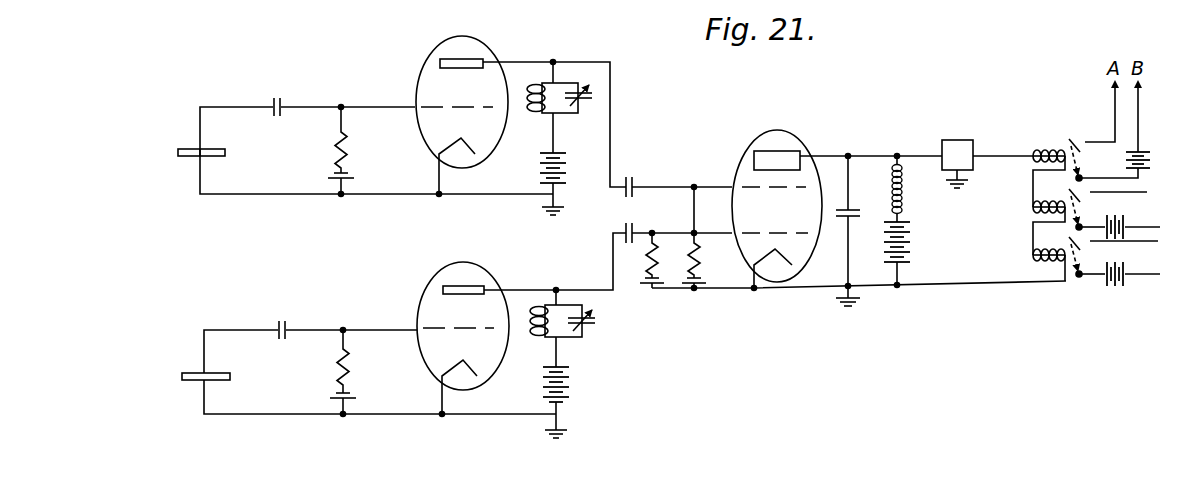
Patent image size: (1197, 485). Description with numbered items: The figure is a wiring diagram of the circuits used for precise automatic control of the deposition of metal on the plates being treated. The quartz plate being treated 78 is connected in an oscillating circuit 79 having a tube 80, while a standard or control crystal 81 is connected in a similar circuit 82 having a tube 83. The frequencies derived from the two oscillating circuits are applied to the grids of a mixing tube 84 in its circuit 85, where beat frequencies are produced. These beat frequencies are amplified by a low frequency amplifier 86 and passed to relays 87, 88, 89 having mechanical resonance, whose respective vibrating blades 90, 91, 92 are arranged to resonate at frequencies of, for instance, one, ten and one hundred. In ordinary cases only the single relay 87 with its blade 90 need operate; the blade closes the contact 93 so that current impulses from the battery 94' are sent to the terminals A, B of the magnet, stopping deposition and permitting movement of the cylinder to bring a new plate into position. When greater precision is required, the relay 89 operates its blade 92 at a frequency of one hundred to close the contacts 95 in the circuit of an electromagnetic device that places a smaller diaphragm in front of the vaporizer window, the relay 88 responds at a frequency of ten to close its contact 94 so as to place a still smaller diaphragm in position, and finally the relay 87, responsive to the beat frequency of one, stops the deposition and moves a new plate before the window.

The quartz plate being treated 78 is at (190, 151).
The oscillating circuit 79 is at (556, 93).
The tube 80 is at (427, 72).
The standard or control crystal 81 is at (190, 381).
The circuit 82 is at (561, 327).
The tube 83 is at (426, 303).
The mixing tube 84 is at (733, 166).
The circuit 85 is at (867, 151).
The low frequency amplifier 86 is at (965, 147).
The relay 87 is at (1033, 156).
The relay 88 is at (1033, 208).
The relay 89 is at (1033, 255).
The vibrating blade 90 is at (1065, 149).
The vibrating blade 91 is at (1063, 201).
The vibrating blade 92 is at (1062, 250).
The contact 93 is at (1087, 143).
The relay contact and battery 94 is at (1119, 215).
The battery 94' is at (1159, 144).
The contacts 95 is at (1092, 242).